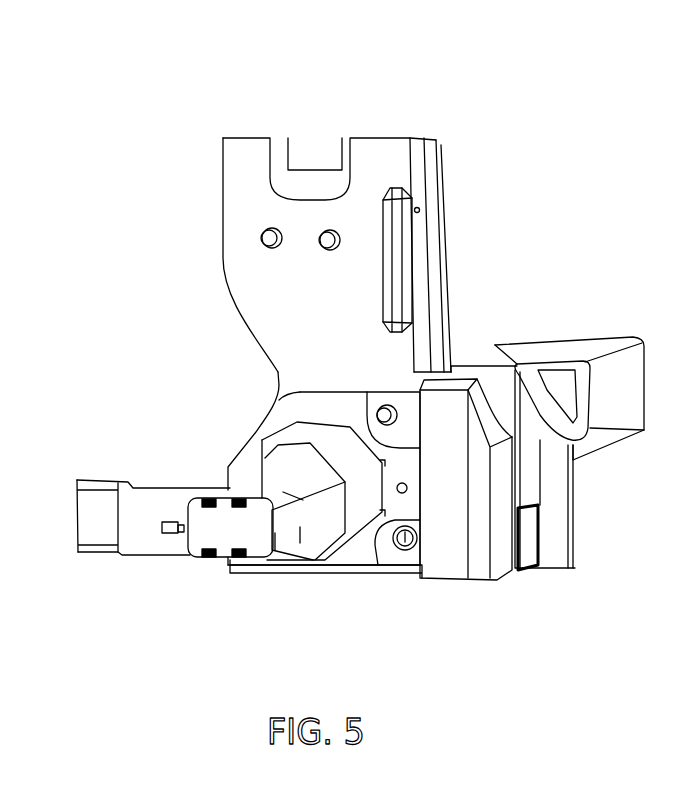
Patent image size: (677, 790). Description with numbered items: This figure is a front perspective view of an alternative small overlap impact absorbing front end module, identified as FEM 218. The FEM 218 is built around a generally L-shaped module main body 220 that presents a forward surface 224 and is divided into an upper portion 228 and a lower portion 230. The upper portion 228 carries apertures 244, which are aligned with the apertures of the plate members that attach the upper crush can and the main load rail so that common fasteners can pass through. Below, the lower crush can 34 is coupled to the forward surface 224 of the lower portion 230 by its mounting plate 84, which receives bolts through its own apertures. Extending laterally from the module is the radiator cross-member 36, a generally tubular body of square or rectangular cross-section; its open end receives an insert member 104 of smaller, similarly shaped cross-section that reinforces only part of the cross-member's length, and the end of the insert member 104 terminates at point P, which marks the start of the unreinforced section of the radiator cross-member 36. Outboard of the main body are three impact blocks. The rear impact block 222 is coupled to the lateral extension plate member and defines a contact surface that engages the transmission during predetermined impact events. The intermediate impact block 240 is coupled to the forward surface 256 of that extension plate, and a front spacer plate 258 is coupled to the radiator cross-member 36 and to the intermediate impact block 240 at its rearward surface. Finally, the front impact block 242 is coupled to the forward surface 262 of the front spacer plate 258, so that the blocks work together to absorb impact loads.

The FEM 218 is at (357, 88).
The upper portion 228 is at (224, 190).
The apertures 244 is at (262, 246).
The module main body 220 is at (258, 327).
The forward surface 224 is at (303, 377).
The mounting plate 84 is at (300, 412).
The insert member 104 is at (144, 540).
The radiator cross-member 36 is at (94, 540).
The point P is at (112, 559).
The lower crush can 34 is at (276, 579).
The lower portion 230 is at (364, 579).
The front impact block 242 is at (462, 568).
The forward surface 262 is at (493, 389).
The front spacer plate 258 is at (501, 386).
The intermediate impact block 240 is at (525, 476).
The forward surface 256 is at (553, 558).
The rear impact block 222 is at (576, 348).